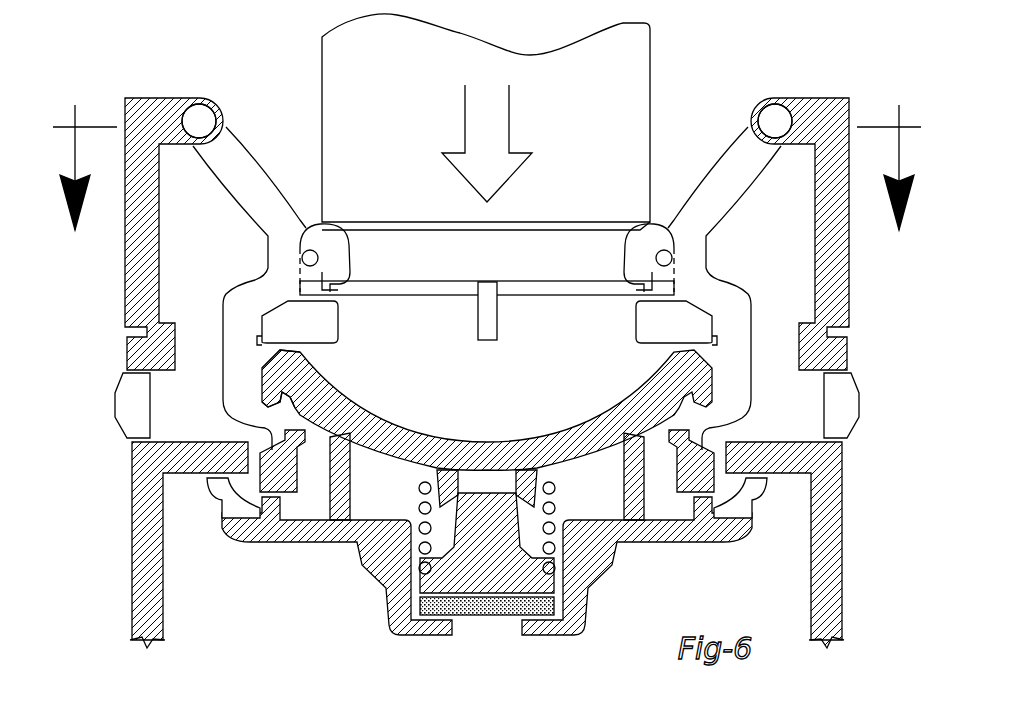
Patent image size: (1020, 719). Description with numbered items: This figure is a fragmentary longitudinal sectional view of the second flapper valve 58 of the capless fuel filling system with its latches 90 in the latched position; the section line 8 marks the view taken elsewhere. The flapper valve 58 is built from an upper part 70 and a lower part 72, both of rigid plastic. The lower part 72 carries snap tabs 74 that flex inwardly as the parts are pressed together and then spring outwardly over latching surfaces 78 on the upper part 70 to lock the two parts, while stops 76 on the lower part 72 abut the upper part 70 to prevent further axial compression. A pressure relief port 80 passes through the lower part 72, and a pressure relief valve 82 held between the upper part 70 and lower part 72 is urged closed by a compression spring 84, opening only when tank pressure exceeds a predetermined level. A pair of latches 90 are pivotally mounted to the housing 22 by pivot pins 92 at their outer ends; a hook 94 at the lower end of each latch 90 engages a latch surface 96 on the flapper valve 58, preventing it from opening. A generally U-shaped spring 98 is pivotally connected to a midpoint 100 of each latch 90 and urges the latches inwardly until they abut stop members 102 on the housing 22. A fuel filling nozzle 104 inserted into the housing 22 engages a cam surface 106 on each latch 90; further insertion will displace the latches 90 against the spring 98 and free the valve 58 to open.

The section line 8- 8 is at (487, 192).
The body 22 is at (842, 307).
The second flapper valve 58 is at (523, 428).
The upper part 70 is at (485, 442).
The lower part 72 is at (367, 570).
The snap tabs 74 is at (298, 443).
The stops 76 is at (350, 502).
The latching surfaces 78 is at (276, 452).
The pressure relief port 80 is at (464, 628).
The pressure relief valve 82 is at (500, 555).
The compression spring 84 is at (425, 488).
The latches 90 is at (233, 200).
The pivot pins 92 is at (201, 113).
The hook 94 is at (273, 393).
The latch surface 96 is at (290, 395).
The U-shaped spring 98 is at (570, 281).
The midpoint 100 is at (351, 240).
The stop members 102 is at (338, 328).
The fuel filling nozzle 104 is at (650, 58).
The cam surface 106 is at (315, 233).